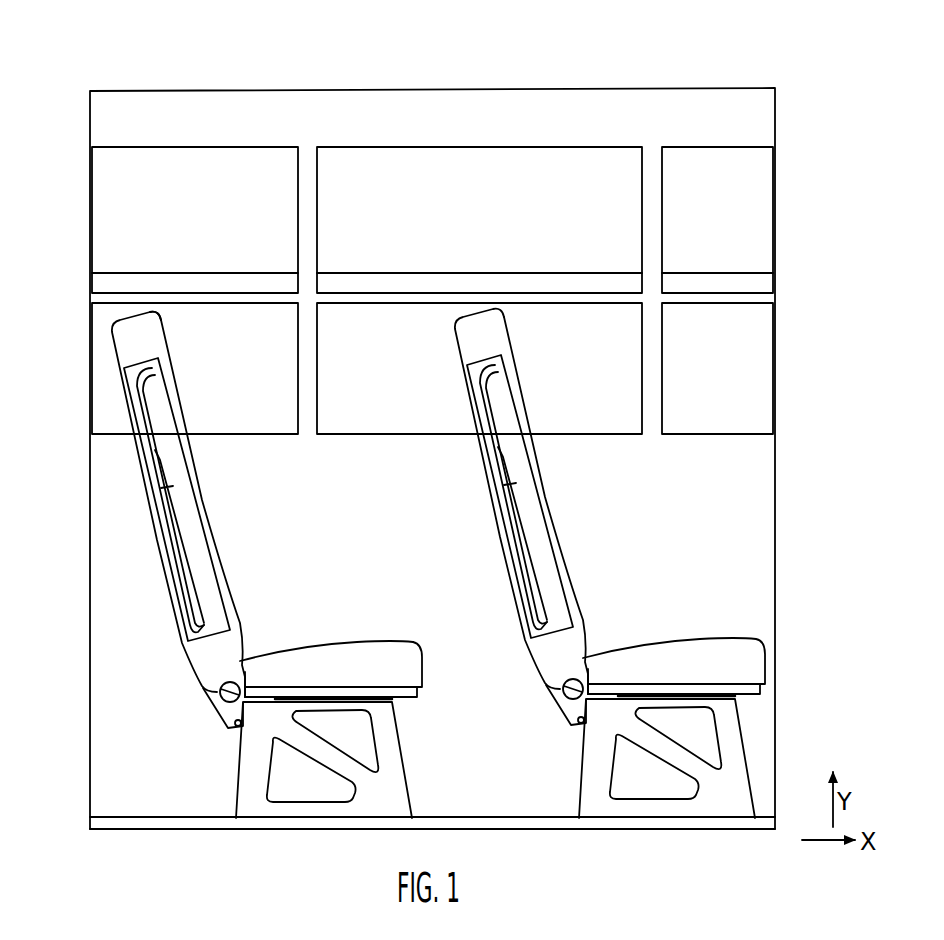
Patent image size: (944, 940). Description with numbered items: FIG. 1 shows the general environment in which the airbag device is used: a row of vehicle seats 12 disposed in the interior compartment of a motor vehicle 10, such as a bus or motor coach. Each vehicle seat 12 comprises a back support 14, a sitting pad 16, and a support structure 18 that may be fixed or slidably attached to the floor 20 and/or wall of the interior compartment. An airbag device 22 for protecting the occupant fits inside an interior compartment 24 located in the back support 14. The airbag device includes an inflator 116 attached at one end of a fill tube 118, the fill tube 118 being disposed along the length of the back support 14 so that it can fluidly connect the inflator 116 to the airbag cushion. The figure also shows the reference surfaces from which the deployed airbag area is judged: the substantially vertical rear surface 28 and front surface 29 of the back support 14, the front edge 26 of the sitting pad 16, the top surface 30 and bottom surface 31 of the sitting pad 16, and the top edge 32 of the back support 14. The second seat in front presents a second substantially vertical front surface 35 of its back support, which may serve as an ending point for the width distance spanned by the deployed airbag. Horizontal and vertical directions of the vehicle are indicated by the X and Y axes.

The motor vehicle 10 is at (796, 81).
The vehicle seat 12 is at (619, 563).
The back support 14 is at (122, 338).
The sitting pad 16 is at (403, 658).
The support structure 18 is at (737, 773).
The floor 20 is at (772, 813).
The airbag device 22 is at (128, 406).
The interior compartment 24 is at (167, 560).
The front edge 26 is at (423, 667).
The rear surface 28 is at (180, 644).
The front surface 29 is at (214, 534).
The top surface 30 is at (352, 642).
The bottom surface 31 is at (758, 692).
The top edge 32 is at (120, 313).
The second front surface 35 is at (557, 528).
The inflator 116 is at (520, 540).
The fill tube 118 is at (487, 411).